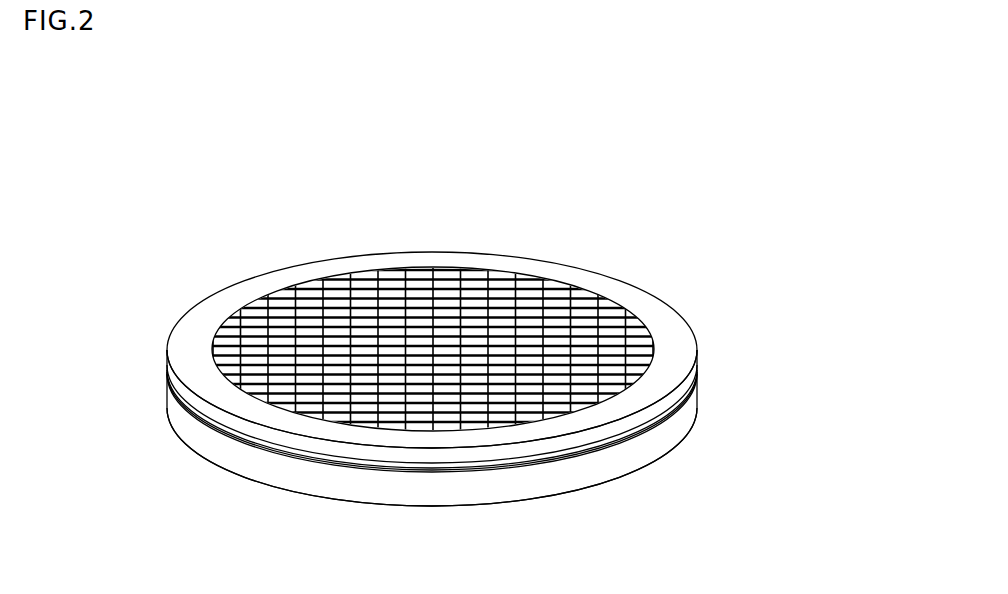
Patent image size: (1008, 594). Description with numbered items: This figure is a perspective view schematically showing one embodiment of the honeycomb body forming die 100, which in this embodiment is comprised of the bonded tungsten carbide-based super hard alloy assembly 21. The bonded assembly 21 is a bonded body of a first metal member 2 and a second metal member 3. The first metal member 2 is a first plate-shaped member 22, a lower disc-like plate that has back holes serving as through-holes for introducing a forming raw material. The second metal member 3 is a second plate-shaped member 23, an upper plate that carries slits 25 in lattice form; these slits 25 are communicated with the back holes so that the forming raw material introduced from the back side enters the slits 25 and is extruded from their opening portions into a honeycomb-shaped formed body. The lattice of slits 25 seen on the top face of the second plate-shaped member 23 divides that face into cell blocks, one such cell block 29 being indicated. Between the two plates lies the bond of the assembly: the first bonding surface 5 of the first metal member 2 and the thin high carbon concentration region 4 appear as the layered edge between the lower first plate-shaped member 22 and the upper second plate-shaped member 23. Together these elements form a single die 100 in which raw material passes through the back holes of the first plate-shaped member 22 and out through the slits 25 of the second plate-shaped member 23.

The honeycomb body forming die 100 is at (822, 60).
The bonded tungsten carbide-based super hard alloy assembly 21 is at (432, 379).
The second plate-shaped member 23 is at (676, 335).
The second metal member 3 is at (432, 399).
The first plate-shaped member 22 is at (674, 432).
The first metal member 2 is at (432, 457).
The high carbon concentration region 4 is at (613, 443).
The first bonding surface 5 is at (217, 420).
The cell block 29 is at (288, 314).
The slit 25 is at (403, 291).